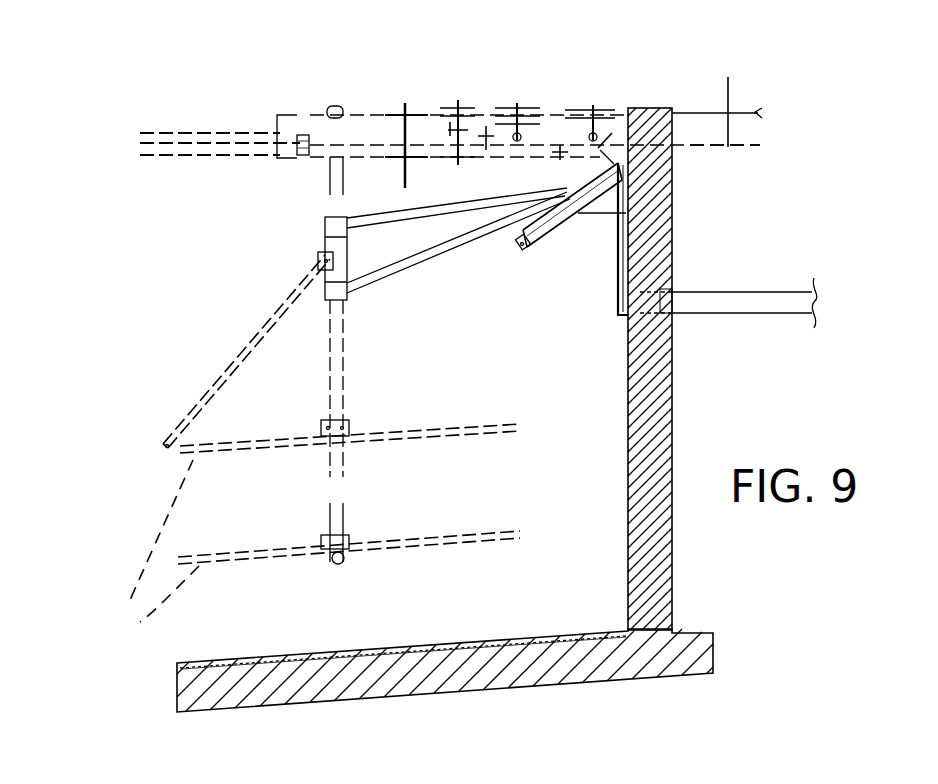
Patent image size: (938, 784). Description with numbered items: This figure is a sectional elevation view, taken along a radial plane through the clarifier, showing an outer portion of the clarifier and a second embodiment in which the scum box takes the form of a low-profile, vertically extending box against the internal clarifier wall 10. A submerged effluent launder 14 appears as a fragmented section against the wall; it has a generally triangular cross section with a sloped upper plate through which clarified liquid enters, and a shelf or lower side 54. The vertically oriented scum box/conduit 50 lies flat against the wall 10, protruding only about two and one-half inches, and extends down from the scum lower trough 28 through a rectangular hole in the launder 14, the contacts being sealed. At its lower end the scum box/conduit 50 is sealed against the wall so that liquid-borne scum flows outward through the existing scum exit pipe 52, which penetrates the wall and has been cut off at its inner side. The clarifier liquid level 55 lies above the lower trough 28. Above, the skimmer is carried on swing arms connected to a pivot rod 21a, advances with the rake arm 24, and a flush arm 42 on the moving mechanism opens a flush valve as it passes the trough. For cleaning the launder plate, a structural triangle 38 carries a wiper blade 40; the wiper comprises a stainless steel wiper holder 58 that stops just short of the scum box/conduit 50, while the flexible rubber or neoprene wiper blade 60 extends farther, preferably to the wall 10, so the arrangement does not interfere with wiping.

The clarifier wall 10 is at (603, 213).
The submerged effluent launder 14 is at (567, 221).
The pivot rod 21a is at (503, 110).
The rake arm 24 is at (295, 459).
The lower trough 28 is at (632, 105).
The structural triangle 38 is at (372, 282).
The wiper blade 40 is at (457, 263).
The flush arm 42 is at (403, 137).
The scum box/conduit 50 is at (617, 273).
The scum exit pipe 52 is at (743, 290).
The lower side of the SEL 54 is at (673, 247).
The clarifier liquid level 55 is at (127, 145).
The wiper holder 58 is at (417, 295).
The wiper blade 60 is at (522, 240).